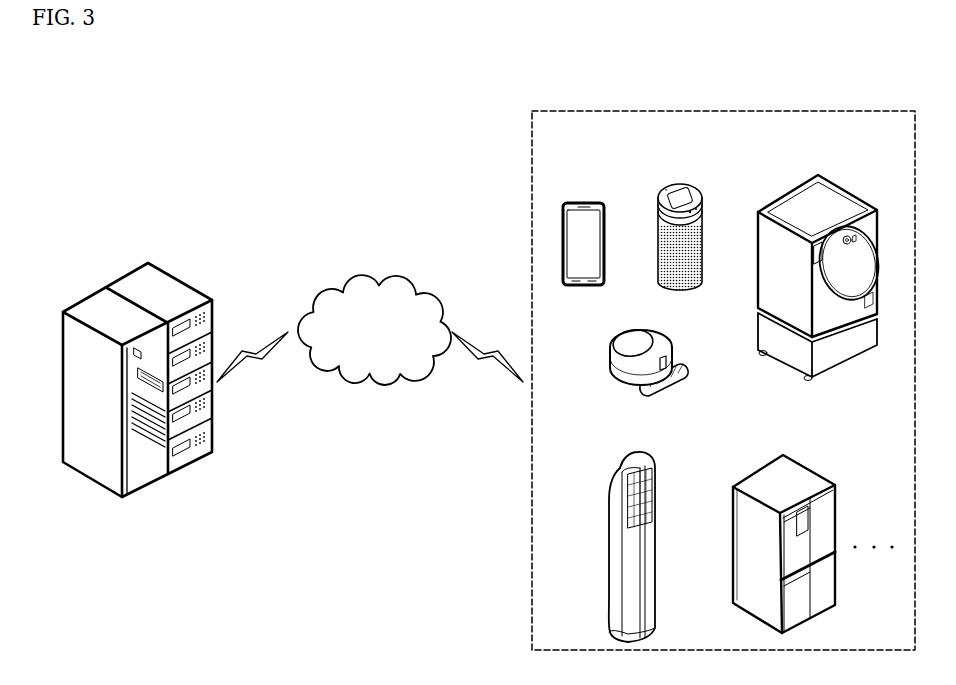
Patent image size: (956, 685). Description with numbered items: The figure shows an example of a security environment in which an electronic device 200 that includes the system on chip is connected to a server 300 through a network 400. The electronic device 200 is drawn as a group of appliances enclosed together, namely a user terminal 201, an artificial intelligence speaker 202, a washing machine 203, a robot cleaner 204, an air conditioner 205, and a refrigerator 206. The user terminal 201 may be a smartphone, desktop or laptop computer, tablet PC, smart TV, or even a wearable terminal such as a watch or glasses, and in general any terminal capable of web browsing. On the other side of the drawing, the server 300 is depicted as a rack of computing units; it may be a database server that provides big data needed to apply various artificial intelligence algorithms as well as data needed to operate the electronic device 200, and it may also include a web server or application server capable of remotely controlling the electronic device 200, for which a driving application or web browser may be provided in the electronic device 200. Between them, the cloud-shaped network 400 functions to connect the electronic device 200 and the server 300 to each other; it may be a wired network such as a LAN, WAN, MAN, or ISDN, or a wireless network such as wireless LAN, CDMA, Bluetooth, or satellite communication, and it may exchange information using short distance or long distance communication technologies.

The electronic device 200 is at (729, 111).
The user terminal 201 is at (585, 203).
The artificial intelligence speaker 202 is at (679, 184).
The washing machine 203 is at (850, 193).
The robot cleaner 204 is at (670, 332).
The air conditioner 205 is at (645, 455).
The refrigerator 206 is at (808, 469).
The server 300 is at (90, 296).
The network 400 is at (373, 277).